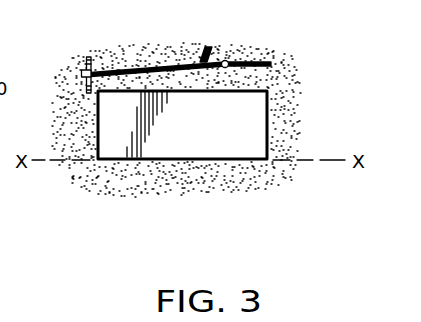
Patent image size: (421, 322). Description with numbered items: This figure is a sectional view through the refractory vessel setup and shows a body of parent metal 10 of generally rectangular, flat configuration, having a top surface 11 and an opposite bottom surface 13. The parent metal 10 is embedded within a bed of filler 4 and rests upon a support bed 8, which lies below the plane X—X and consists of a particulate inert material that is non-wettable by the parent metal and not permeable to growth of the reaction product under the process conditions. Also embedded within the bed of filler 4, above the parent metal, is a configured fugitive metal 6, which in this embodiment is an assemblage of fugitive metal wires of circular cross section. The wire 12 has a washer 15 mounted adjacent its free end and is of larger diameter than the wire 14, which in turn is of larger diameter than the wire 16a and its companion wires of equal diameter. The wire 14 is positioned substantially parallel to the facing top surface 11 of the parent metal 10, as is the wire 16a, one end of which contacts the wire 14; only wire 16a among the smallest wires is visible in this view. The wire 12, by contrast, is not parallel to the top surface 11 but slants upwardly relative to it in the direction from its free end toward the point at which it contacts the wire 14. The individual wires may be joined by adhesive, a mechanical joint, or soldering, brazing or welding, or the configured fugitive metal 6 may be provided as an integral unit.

The bed of filler 4 is at (273, 82).
The configured fugitive metal 6 is at (205, 47).
The support bed 8 is at (228, 170).
The body of parent metal 10 is at (232, 123).
The top surface 11 is at (167, 91).
The wire 12 is at (147, 64).
The bottom surface 13 is at (155, 160).
The wire 14 is at (227, 61).
The washer 15 is at (87, 58).
The wire 16a is at (267, 60).